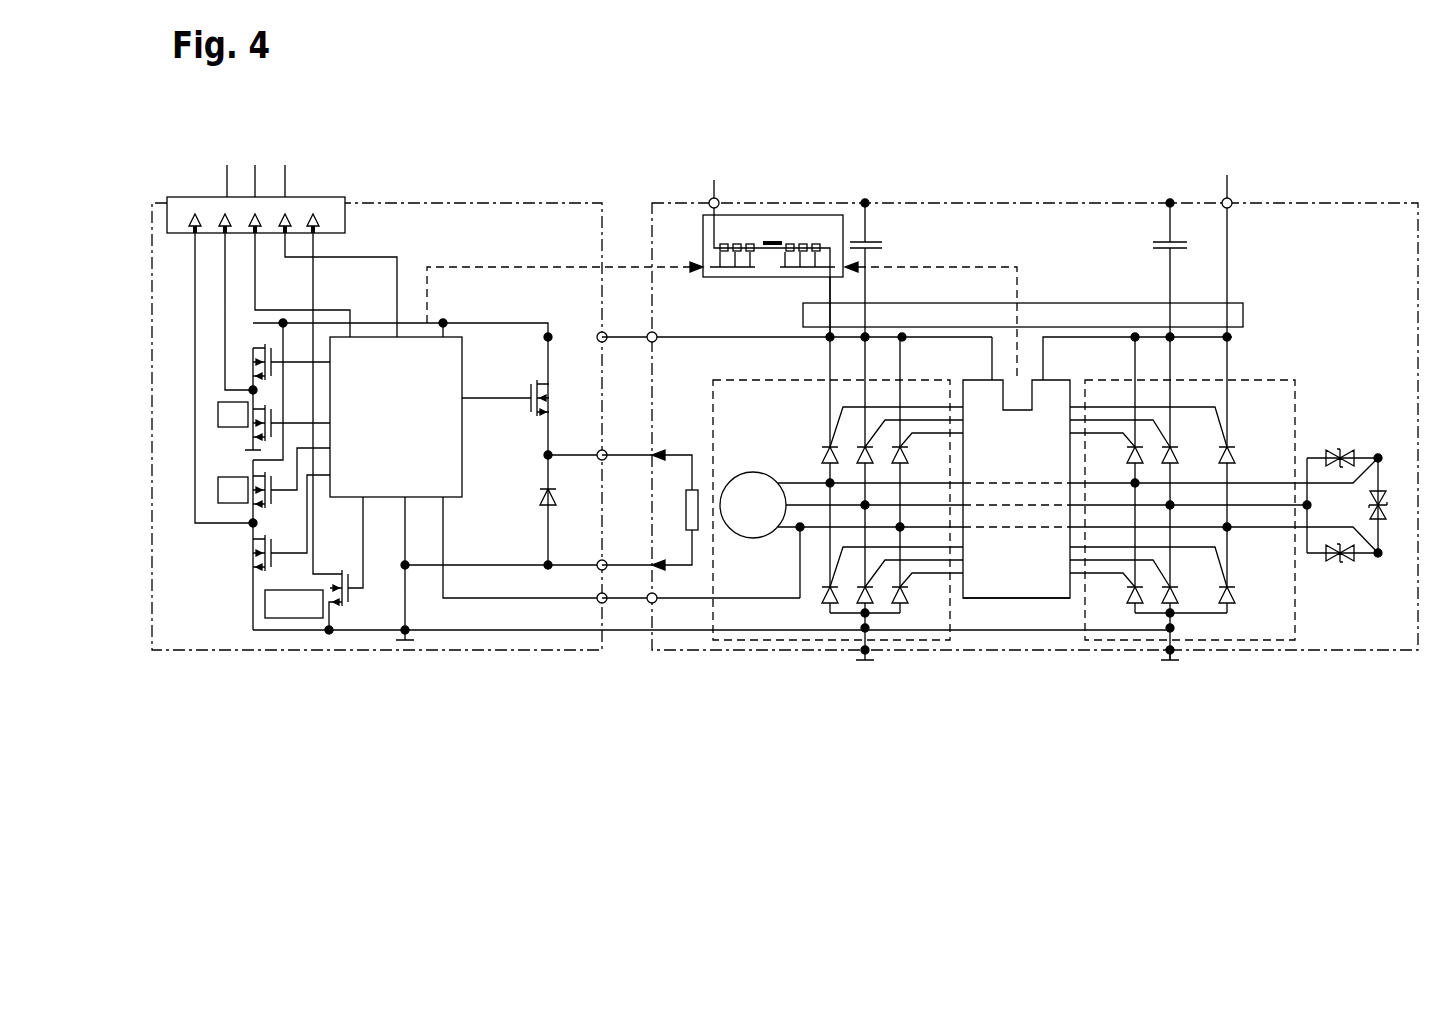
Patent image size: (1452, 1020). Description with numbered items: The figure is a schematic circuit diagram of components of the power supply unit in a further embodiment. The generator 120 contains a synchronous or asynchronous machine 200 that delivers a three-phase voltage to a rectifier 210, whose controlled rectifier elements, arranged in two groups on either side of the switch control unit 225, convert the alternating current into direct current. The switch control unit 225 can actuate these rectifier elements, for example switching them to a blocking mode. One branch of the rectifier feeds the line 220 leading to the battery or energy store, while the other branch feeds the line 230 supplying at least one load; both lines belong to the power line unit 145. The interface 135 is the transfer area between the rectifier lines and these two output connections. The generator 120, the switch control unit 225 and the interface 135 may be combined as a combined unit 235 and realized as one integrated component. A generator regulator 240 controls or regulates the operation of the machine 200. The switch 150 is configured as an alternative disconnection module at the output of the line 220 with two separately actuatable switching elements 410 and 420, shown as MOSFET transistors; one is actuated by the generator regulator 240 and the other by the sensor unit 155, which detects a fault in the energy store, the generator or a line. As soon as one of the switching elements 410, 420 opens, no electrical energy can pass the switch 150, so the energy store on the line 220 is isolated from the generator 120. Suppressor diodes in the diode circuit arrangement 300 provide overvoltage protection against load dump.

The power line unit 145 is at (1290, 140).
The line B+ 220 is at (714, 190).
The line R+ 230 is at (1227, 190).
The first switching element 410 is at (728, 232).
The switch 150 is at (770, 215).
The second switching element 420 is at (812, 232).
The sensor unit 155 is at (1020, 395).
The interface 135 is at (1243, 315).
The generator 120 is at (715, 395).
The rectifier 210 is at (850, 390).
The generator regulator 240 is at (503, 655).
The combined unit 235 is at (667, 655).
The synchronous or asynchronous machine 200 is at (752, 540).
The switch control unit 225 is at (1062, 600).
The diode circuit arrangement 300 is at (1378, 572).